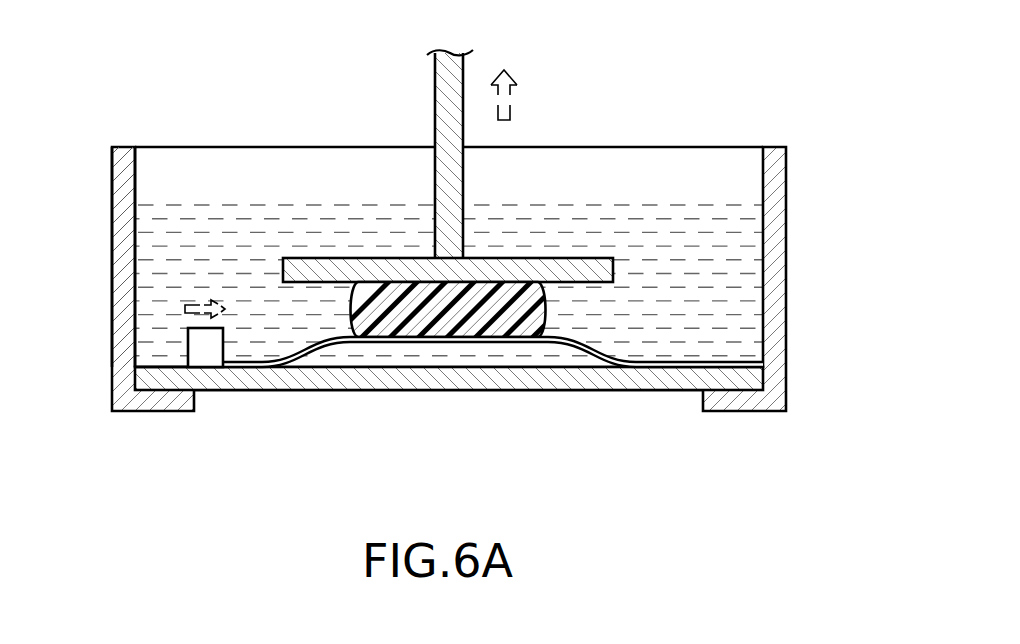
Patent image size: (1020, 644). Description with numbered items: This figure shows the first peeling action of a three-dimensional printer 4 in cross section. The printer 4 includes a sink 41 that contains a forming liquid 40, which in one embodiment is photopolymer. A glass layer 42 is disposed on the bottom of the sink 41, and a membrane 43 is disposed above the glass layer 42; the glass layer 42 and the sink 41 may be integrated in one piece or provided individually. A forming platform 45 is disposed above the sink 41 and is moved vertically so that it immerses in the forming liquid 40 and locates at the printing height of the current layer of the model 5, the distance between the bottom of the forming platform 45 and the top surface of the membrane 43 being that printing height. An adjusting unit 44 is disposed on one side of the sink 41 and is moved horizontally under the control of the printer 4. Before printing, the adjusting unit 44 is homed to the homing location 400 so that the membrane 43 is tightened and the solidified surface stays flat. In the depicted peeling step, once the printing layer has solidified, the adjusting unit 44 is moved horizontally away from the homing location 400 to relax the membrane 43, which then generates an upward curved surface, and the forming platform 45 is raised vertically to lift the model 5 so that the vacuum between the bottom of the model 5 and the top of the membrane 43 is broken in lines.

The 3D printer 4 is at (250, 48).
The forming liquid 40 is at (693, 230).
The homing location 400 is at (153, 368).
The sink 41 is at (126, 171).
The glass layer 42 is at (330, 372).
The membrane 43 is at (566, 352).
The adjusting unit 44 is at (208, 343).
The forming platform 45 is at (577, 270).
The model 5 is at (522, 305).